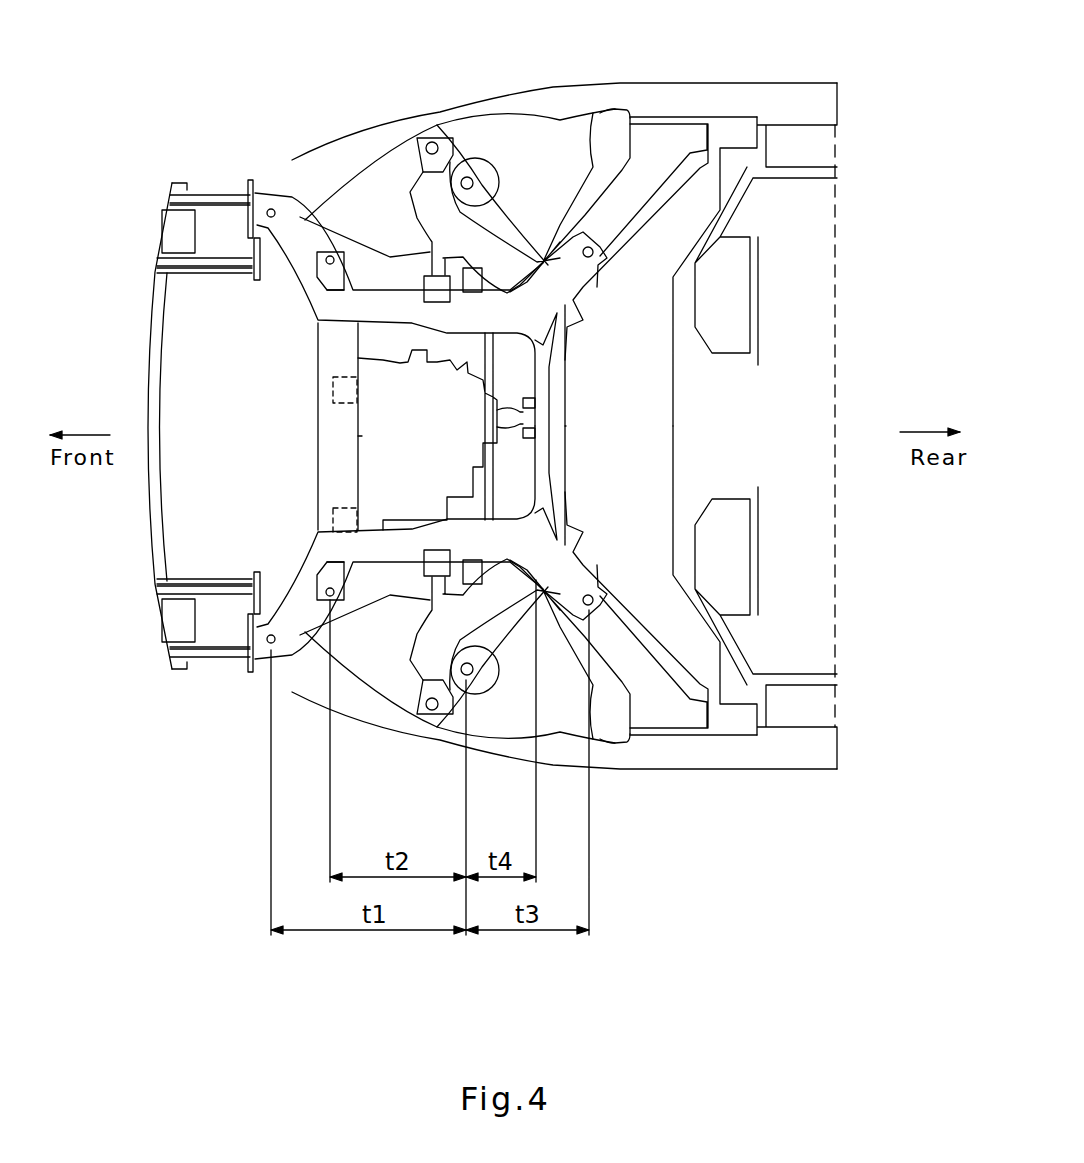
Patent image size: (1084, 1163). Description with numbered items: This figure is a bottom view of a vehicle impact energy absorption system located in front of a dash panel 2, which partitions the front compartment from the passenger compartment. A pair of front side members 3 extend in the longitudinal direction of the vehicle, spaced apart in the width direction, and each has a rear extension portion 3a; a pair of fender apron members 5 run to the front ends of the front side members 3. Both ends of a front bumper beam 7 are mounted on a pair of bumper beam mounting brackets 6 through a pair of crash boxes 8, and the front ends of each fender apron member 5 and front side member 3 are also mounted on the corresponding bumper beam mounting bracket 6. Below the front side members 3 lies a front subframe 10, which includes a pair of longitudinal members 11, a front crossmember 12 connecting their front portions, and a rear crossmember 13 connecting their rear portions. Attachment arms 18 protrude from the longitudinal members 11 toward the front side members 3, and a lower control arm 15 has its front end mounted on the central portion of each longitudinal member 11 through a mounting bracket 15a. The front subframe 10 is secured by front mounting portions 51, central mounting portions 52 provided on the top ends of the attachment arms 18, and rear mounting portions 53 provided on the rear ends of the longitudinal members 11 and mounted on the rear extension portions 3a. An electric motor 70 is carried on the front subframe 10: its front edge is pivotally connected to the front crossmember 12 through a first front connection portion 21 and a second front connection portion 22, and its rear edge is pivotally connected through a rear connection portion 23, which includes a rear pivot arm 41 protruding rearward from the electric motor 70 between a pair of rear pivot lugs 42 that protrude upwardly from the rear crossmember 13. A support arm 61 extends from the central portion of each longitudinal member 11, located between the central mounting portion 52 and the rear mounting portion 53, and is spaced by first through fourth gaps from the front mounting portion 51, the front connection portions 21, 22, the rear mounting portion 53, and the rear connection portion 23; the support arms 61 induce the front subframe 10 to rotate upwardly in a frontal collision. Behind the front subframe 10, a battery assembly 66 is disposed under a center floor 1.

The center floor 1 is at (805, 130).
The dash panel 2 is at (577, 180).
The front side member 3 is at (365, 610).
The rear extension portion 3a is at (635, 670).
The fender apron member 5 is at (440, 738).
The bumper beam mounting bracket 6 is at (258, 590).
The front bumper beam 7 is at (155, 389).
The crash box 8 is at (225, 605).
The front subframe 10 is at (312, 415).
The longitudinal member 11 is at (383, 317).
The front crossmember 12 is at (330, 476).
The rear crossmember 13 is at (553, 485).
The lower control arm 15 is at (430, 700).
The mounting bracket 15a is at (437, 303).
The attachment arm 18 is at (330, 572).
The first front connection portion 21 is at (333, 390).
The second front connection portion 22 is at (345, 508).
The rear connection portion 23 is at (572, 422).
The rear pivot arm 41 is at (497, 416).
The rear pivot lug 42 is at (535, 403).
The front mounting portion 51 is at (271, 646).
The central mounting portion 52 is at (330, 600).
The rear mounting portion 53 is at (595, 600).
The support arm 61 is at (470, 690).
The battery assembly 66 is at (805, 412).
The electric motor 70 is at (370, 448).